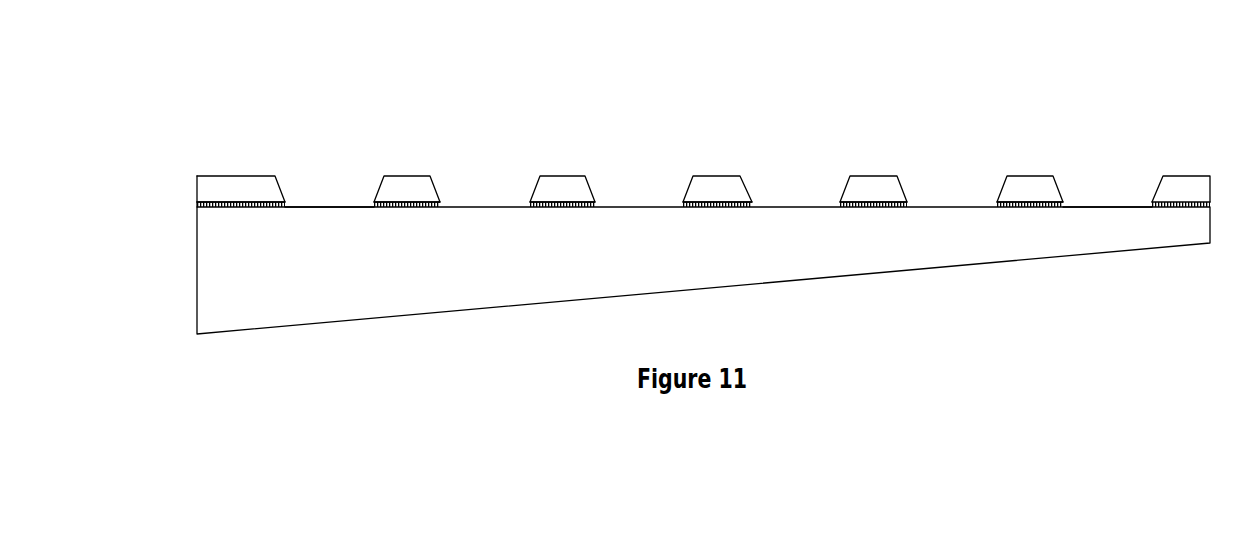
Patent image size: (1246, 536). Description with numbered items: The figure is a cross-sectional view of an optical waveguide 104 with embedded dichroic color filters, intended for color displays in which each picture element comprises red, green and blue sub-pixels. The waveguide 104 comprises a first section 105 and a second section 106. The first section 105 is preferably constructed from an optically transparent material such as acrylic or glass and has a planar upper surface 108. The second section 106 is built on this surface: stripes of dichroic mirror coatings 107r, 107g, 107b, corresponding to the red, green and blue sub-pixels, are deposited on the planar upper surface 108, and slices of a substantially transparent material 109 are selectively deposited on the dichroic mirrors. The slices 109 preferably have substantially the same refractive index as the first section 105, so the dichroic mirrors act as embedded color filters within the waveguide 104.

The optical waveguide 104 is at (285, 117).
The first section 105 is at (185, 207).
The second section 106 is at (185, 176).
The red dichroic mirror coating stripe 107r is at (253, 202).
The green dichroic mirror coating stripe 107g is at (390, 207).
The blue dichroic mirror coating stripe 107b is at (543, 202).
The planar upper surface 108 is at (315, 207).
The slices of substantially transparent material 109 is at (413, 188).